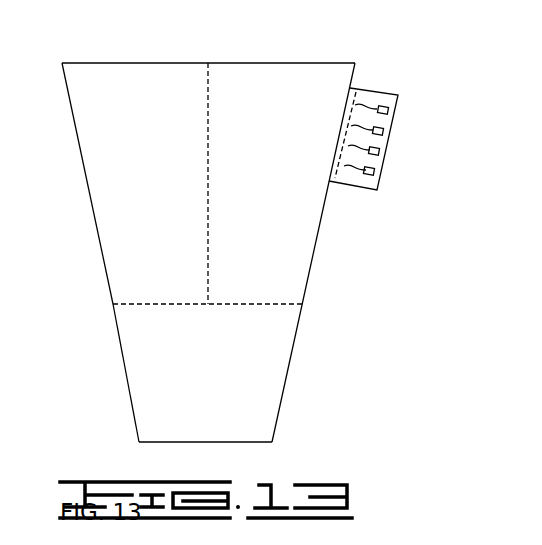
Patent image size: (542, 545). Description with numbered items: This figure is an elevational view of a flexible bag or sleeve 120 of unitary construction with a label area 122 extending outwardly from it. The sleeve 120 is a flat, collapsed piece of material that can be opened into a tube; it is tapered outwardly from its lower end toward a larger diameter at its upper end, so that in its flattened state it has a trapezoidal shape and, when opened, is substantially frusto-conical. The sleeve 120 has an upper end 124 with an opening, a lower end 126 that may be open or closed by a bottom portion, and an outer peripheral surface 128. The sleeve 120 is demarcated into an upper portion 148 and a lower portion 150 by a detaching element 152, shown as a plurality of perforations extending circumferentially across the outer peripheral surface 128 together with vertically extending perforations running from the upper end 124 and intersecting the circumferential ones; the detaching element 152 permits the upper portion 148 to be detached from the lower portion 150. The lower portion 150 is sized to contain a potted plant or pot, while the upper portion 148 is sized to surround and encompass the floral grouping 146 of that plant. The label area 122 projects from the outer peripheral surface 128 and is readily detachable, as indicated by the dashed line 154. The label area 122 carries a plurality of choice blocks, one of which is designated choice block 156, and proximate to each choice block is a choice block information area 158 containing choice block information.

The sleeve 120 is at (225, 238).
The label area 122 is at (390, 130).
The upper end 124 is at (262, 63).
The lower end 126 is at (247, 442).
The outer peripheral surface 128 is at (296, 338).
The floral grouping 146 is at (104, 181).
The upper portion 148 is at (90, 202).
The lower portion 150 is at (122, 354).
The detaching element 152 is at (170, 306).
The dashed line 154 is at (356, 92).
The choice block 156 is at (373, 177).
The choice block information area 158 is at (352, 168).